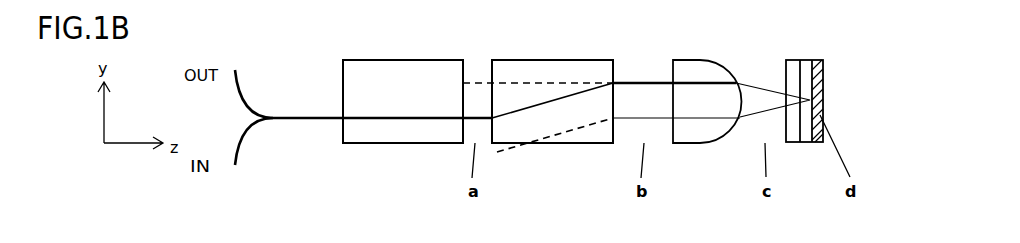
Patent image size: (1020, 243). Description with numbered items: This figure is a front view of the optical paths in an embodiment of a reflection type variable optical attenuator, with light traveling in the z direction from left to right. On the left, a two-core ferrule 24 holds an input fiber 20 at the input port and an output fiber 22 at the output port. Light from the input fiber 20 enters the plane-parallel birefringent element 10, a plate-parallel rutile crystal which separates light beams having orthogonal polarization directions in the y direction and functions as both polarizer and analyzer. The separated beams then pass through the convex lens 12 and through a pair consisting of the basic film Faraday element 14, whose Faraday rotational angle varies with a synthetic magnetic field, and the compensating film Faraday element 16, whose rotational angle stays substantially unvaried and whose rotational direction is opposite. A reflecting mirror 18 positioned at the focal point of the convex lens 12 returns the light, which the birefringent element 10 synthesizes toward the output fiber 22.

The plane-parallel birefringent element 10 is at (553, 68).
The convex lens 12 is at (715, 68).
The basic film Faraday element 14 is at (803, 62).
The compensating film Faraday element 16 is at (786, 72).
The reflecting mirror 18 is at (826, 70).
The input fiber 20 is at (312, 122).
The output fiber 22 is at (302, 114).
The two-core ferrule 24 is at (427, 68).